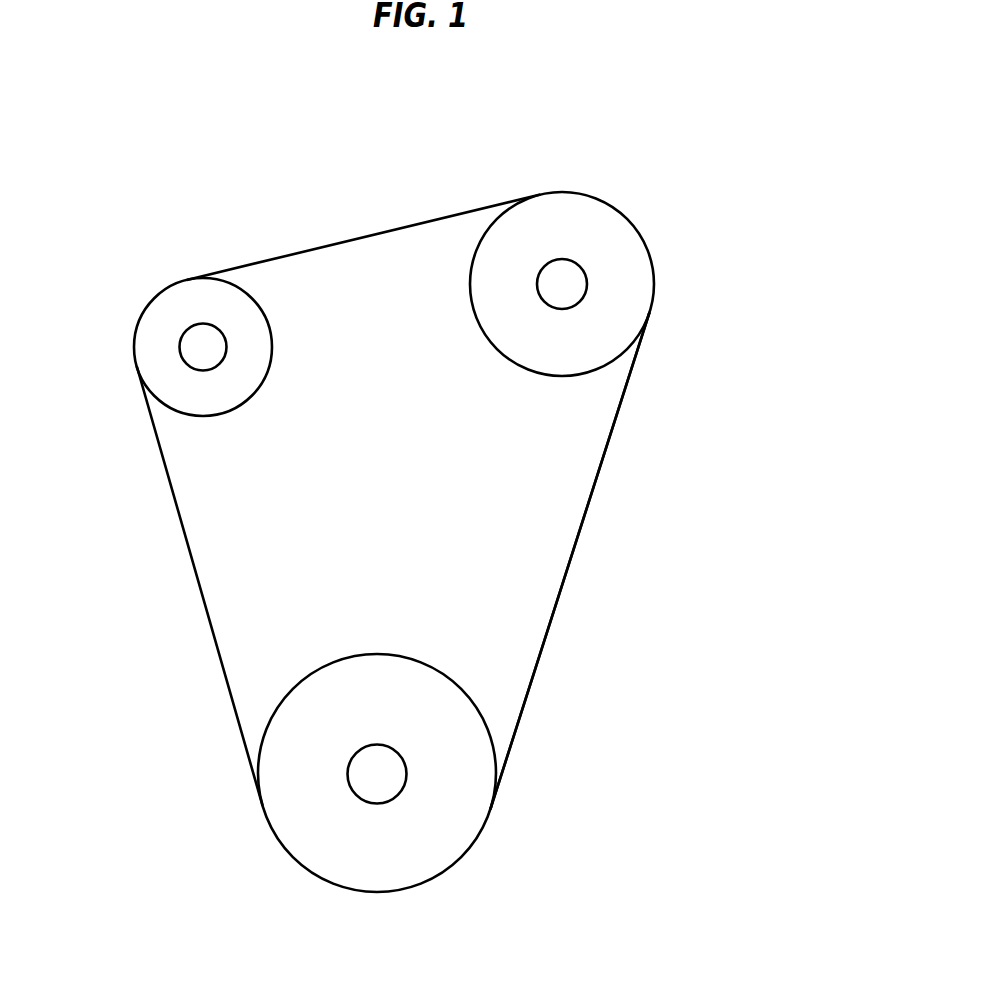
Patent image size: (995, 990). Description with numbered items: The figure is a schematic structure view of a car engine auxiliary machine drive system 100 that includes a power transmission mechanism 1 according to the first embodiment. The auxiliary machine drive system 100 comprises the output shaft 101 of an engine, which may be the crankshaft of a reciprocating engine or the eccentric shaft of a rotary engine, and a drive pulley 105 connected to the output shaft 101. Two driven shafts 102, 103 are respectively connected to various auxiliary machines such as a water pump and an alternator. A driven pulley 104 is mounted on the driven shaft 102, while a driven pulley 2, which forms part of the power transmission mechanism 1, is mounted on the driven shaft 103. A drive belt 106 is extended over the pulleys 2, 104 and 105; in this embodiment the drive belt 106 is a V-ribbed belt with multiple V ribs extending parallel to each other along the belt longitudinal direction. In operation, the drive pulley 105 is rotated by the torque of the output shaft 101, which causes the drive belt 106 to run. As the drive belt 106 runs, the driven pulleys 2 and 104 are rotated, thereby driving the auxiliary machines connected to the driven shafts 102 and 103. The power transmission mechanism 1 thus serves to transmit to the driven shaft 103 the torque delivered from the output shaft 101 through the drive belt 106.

The auxiliary machine drive system 100 is at (565, 155).
The power transmission mechanism 1 is at (268, 288).
The driven pulley 2 is at (183, 415).
The output shaft 101 is at (377, 804).
The driven shaft 102 is at (585, 272).
The driven shaft 103 is at (178, 345).
The driven pulley 104 is at (585, 375).
The drive pulley 105 is at (483, 718).
The drive belt 106 is at (580, 533).